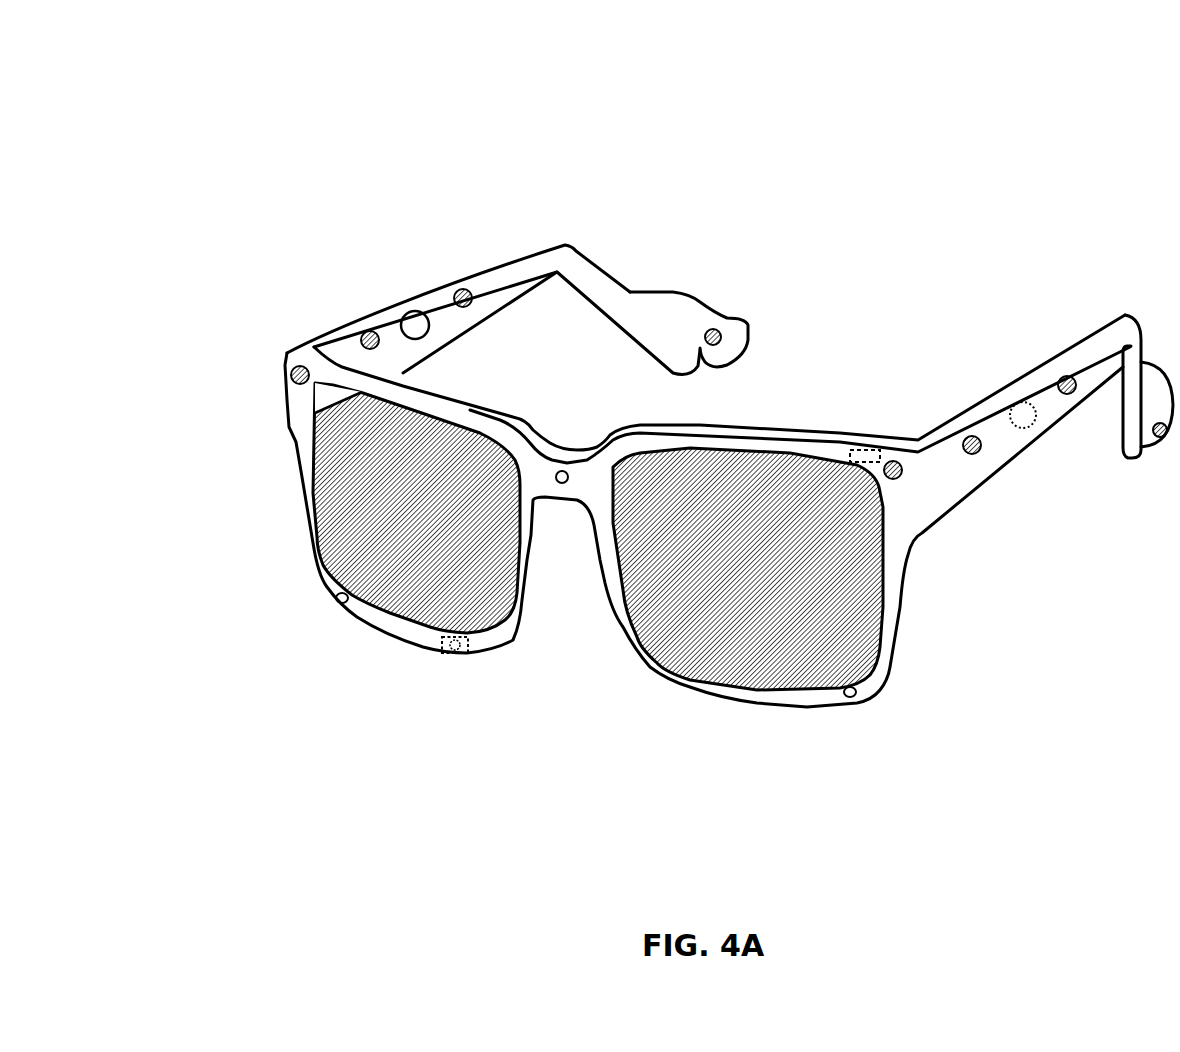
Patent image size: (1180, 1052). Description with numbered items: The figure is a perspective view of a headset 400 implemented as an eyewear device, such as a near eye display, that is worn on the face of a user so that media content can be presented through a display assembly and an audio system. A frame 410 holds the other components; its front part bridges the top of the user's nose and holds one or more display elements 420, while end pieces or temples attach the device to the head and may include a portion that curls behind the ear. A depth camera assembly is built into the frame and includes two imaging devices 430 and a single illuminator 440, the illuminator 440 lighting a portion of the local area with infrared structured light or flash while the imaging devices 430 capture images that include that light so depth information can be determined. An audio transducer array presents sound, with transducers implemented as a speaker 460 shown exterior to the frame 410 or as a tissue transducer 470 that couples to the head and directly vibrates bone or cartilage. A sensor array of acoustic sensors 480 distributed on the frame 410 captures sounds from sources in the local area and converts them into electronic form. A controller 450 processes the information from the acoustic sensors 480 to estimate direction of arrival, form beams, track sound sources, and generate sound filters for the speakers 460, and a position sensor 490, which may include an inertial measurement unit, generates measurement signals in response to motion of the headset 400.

The headset 400 is at (187, 84).
The frame 410 is at (724, 407).
The display element 420 is at (540, 536).
The imaging device 430 is at (557, 685).
The illuminator 440 is at (575, 625).
The controller 450 is at (865, 387).
The speaker 460 is at (718, 293).
The tissue transducer 470 is at (883, 273).
The acoustic sensor 480 is at (642, 347).
The position sensor 490 is at (443, 715).